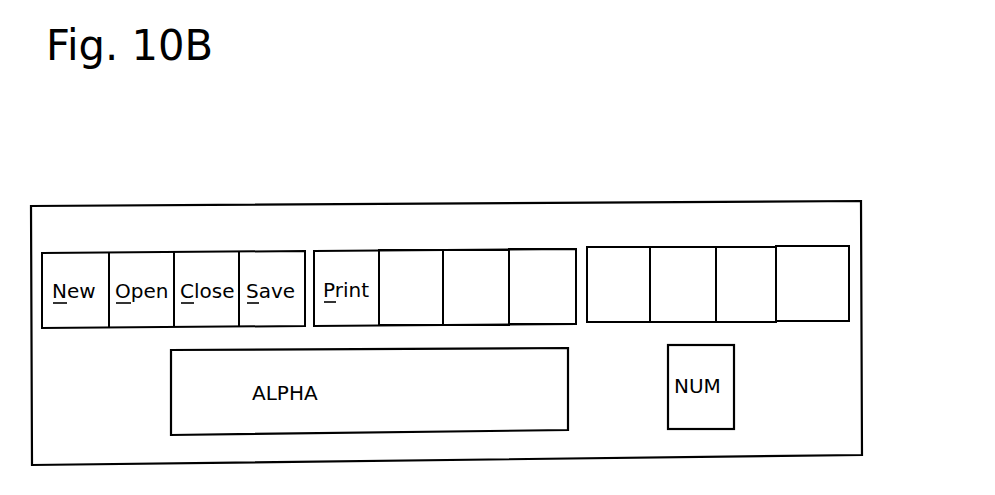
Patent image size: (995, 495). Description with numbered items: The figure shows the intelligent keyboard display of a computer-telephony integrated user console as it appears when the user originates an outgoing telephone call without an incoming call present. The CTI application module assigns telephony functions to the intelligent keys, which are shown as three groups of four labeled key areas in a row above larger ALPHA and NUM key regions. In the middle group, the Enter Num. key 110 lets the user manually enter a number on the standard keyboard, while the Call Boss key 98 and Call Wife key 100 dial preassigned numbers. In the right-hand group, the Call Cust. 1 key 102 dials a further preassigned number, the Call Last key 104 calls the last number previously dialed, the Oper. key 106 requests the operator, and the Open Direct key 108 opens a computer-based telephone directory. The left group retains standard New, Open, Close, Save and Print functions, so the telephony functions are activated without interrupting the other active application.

The preassigned number dialing key 98 is at (473, 250).
The preassigned number dialing key 100 is at (538, 250).
The preassigned number dialing key 102 is at (612, 247).
The last number redial key 104 is at (680, 247).
The operator request key 106 is at (740, 247).
The open directory key 108 is at (810, 247).
The manual number entry key 110 is at (410, 252).